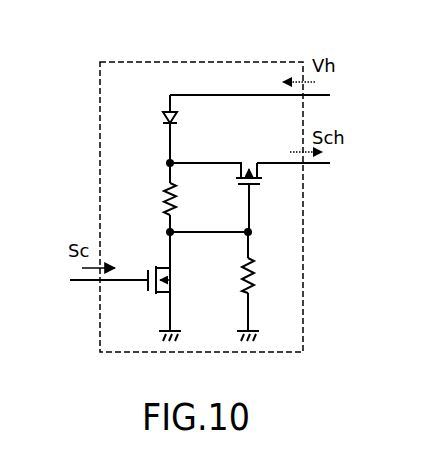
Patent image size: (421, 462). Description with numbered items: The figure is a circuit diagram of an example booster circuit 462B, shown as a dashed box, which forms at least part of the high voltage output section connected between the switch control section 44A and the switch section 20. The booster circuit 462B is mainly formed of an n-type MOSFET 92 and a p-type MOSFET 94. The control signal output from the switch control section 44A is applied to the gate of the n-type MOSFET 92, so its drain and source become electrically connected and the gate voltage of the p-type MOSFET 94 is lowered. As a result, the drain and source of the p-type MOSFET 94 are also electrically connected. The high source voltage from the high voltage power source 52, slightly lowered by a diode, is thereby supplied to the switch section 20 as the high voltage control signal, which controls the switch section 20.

The booster circuit 462B is at (144, 61).
The high voltage power source 52 is at (263, 95).
The switch section 20 is at (307, 163).
The p-type MOSFET 94 is at (228, 173).
The n-type MOSFET 92 is at (158, 262).
The switch control section 44A is at (91, 280).